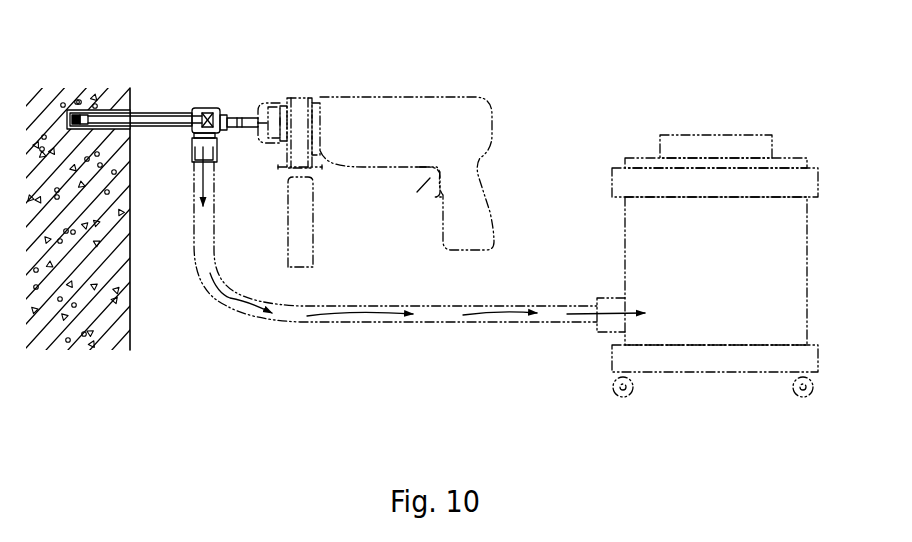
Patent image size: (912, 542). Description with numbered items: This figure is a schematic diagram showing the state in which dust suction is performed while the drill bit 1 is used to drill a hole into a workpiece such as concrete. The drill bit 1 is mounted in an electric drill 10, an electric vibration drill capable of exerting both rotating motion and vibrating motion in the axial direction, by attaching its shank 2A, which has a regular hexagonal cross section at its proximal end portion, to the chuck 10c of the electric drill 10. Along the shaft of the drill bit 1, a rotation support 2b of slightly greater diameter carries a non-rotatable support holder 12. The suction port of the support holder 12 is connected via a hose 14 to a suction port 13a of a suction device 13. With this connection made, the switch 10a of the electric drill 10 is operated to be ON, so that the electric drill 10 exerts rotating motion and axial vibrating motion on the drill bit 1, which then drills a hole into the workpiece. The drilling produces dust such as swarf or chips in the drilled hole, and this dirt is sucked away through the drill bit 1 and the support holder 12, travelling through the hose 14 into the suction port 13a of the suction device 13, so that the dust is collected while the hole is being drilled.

The drill bit 1 is at (155, 113).
The rotation support 2b is at (200, 108).
The shank 2A is at (271, 143).
The electric drill 10 is at (376, 139).
The switch 10a is at (430, 178).
The chuck 10c is at (272, 104).
The support holder 12 is at (192, 148).
The suction device 13 is at (712, 266).
The suction port 13a is at (597, 290).
The hose 14 is at (301, 323).